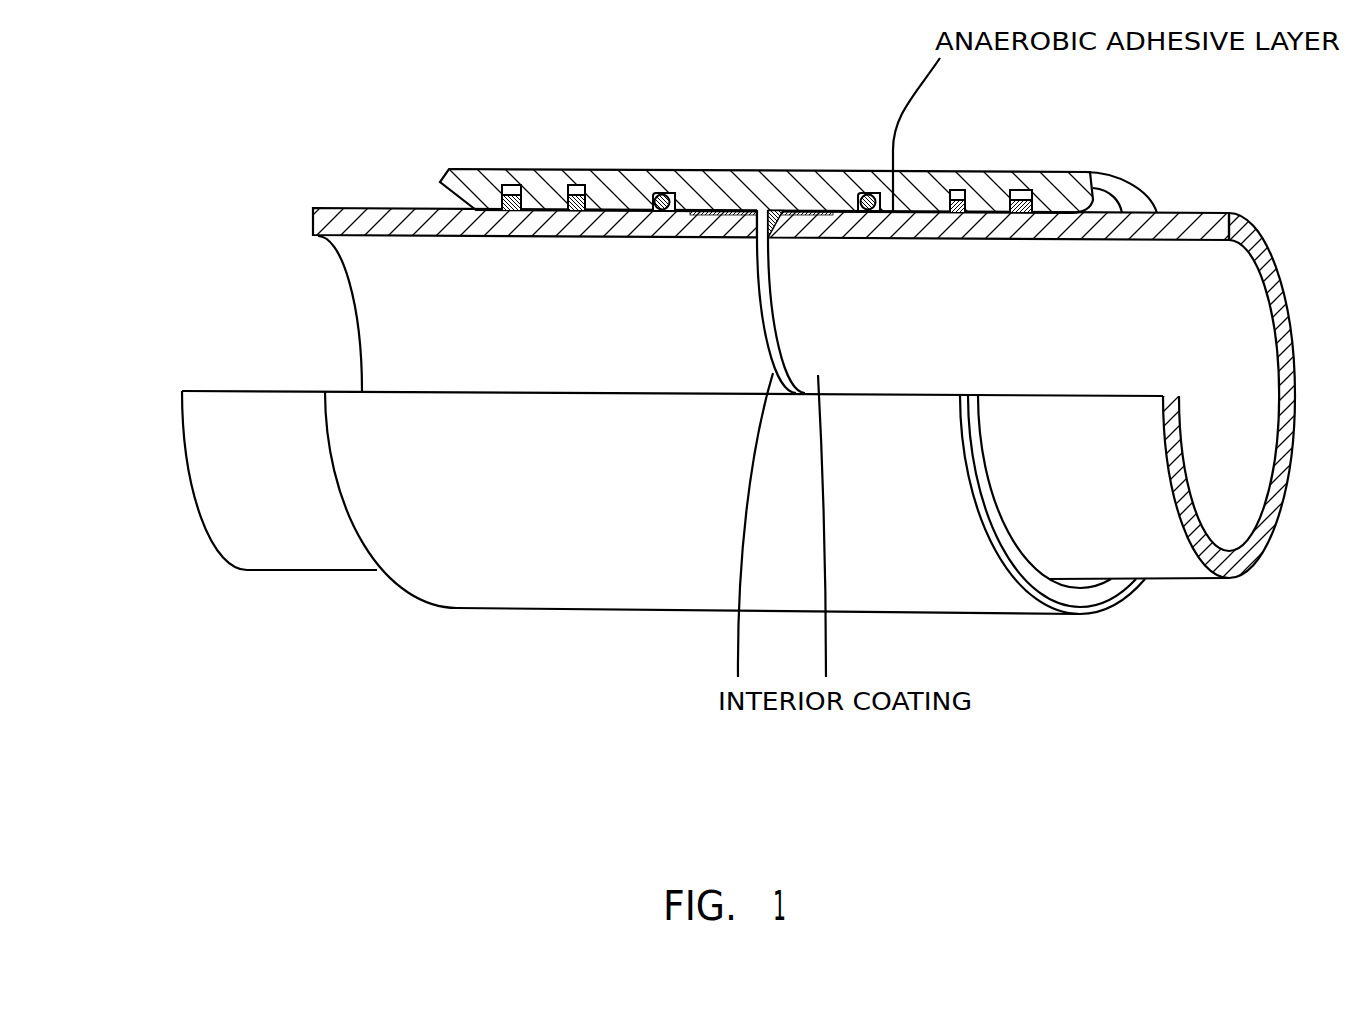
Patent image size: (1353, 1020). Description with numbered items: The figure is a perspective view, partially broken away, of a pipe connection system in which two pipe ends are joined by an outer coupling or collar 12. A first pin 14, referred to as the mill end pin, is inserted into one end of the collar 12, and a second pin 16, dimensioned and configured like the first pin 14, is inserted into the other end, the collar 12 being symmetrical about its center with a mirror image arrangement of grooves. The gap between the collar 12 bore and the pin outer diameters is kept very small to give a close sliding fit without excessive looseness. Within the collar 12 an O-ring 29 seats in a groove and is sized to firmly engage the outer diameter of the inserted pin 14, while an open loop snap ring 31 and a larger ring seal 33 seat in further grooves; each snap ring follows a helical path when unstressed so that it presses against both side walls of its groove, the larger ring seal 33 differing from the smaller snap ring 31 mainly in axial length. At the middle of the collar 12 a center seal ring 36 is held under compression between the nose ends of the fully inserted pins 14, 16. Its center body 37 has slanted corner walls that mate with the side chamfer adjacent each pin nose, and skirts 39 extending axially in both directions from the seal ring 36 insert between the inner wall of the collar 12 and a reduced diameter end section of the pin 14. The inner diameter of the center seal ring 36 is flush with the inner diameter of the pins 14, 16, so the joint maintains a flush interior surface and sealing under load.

The collar 12 is at (925, 171).
The first pin 14 is at (416, 208).
The second pin 16 is at (1178, 212).
The O-ring 29 is at (660, 210).
The snap ring 31 is at (577, 207).
The ring seal 33 is at (511, 207).
The center seal ring 36 is at (758, 238).
The center body 37 is at (771, 223).
The skirts 39 is at (812, 215).